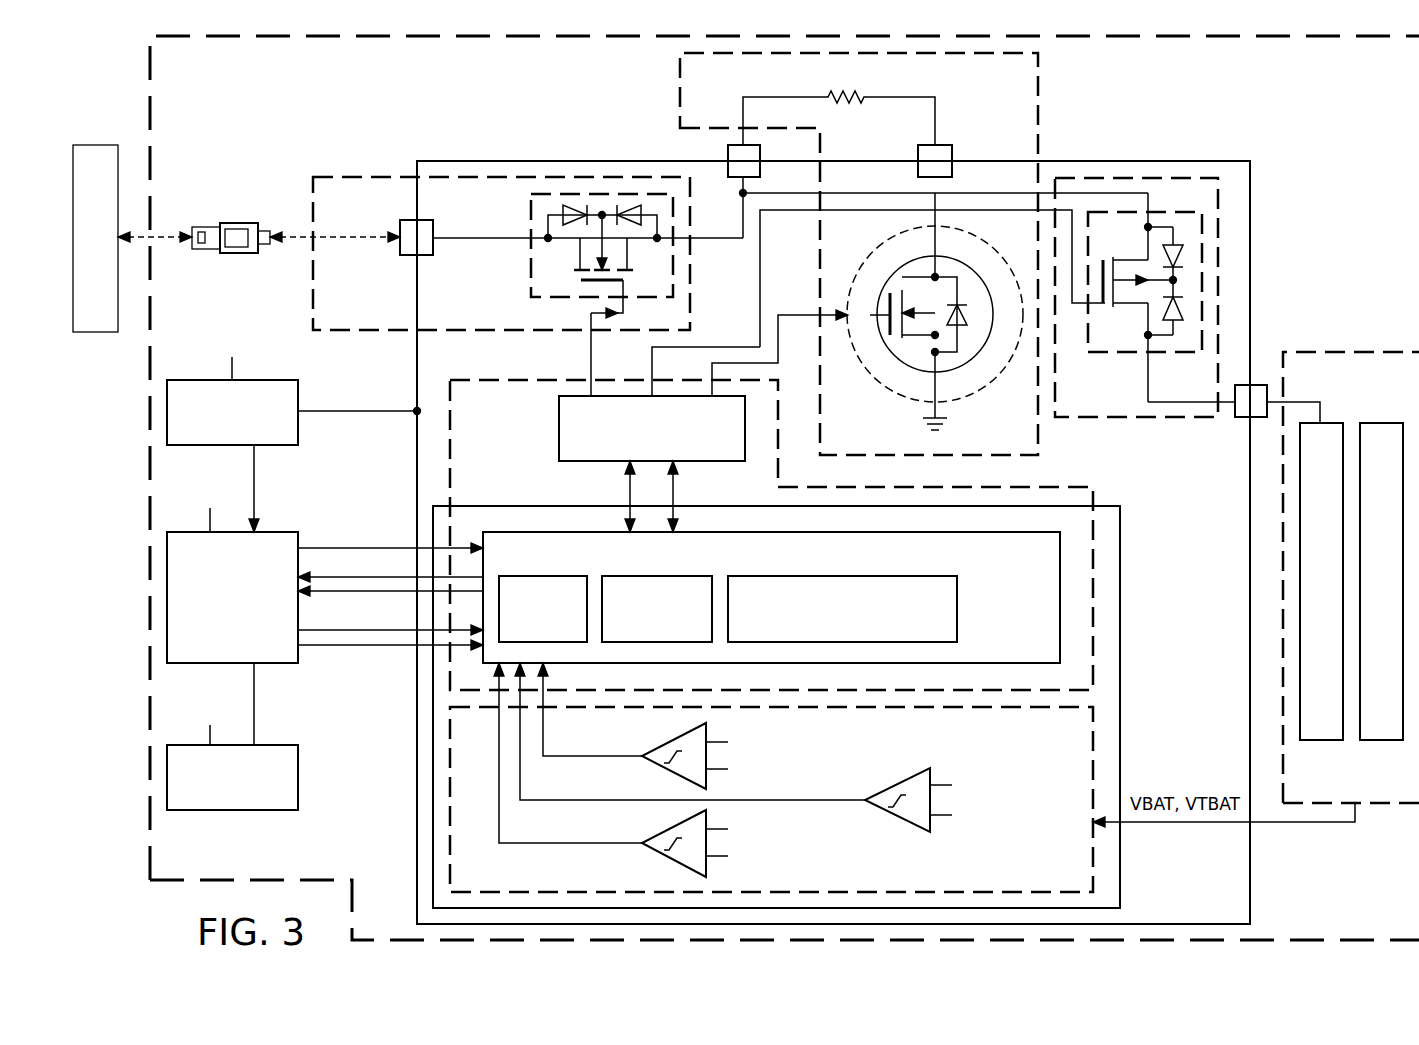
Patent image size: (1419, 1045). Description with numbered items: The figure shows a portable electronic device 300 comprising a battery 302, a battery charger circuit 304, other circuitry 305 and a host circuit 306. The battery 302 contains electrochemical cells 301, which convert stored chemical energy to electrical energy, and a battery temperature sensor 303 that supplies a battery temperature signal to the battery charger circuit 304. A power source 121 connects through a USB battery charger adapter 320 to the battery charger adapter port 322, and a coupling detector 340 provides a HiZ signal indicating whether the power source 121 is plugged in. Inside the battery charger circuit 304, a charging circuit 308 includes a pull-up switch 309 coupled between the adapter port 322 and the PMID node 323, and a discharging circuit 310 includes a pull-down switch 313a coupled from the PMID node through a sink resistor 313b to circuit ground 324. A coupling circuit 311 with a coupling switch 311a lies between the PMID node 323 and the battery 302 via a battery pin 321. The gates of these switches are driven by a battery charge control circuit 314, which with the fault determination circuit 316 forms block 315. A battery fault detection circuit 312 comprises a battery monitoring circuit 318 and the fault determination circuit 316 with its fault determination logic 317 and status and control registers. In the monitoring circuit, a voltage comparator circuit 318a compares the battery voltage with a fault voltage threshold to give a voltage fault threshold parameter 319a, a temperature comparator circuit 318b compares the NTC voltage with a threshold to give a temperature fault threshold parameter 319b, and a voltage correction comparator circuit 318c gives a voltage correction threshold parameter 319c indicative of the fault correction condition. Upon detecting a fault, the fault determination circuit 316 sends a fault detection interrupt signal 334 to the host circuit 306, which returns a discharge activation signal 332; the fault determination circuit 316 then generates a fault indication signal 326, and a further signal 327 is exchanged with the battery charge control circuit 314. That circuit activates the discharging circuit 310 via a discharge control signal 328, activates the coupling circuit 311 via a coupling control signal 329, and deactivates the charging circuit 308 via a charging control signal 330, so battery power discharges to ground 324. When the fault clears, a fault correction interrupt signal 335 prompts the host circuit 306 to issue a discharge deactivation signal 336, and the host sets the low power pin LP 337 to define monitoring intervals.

The power source 121 is at (96, 145).
The portable electronic device 300 is at (251, 93).
The electrochemical cells 301 is at (1318, 742).
The battery 302 is at (1367, 348).
The battery temperature sensor 303 is at (1380, 742).
The battery charger circuit 304 is at (503, 159).
The other circuitry 305 is at (233, 812).
The host circuit 306 is at (250, 641).
The charging circuit 308 is at (372, 175).
The pull-up switch 309 is at (531, 272).
The discharging circuit 310 is at (1042, 112).
The coupling circuit 311 is at (1136, 325).
The coupling switch 311a is at (1118, 354).
The battery fault detection circuit 312 is at (1124, 567).
The pull-down switch 313a is at (884, 386).
The sink resistor 313b is at (845, 102).
The battery charge control circuit 314 is at (559, 422).
The block 315 is at (525, 473).
The fault determination circuit 316 is at (1026, 573).
The fault determination logic 317 is at (957, 608).
The battery monitoring circuit 318 is at (1051, 868).
The voltage comparator circuit 318a is at (662, 728).
The temperature comparator circuit 318b is at (895, 822).
The voltage correction comparator circuit 318c is at (668, 854).
The voltage fault threshold parameter 319a is at (627, 762).
The temperature fault threshold parameter 319b is at (638, 801).
The voltage correction threshold parameter 319c is at (560, 846).
The battery charger adapter 320 is at (238, 253).
The battery pin 321 is at (1243, 420).
The battery charger adapter port 322 is at (400, 228).
The PMID node 323 is at (728, 152).
The circuit ground 324 is at (947, 420).
The fault indication signal 326 is at (628, 490).
The signal 327 is at (676, 490).
The discharge control signal 328 is at (805, 313).
The coupling control signal 329 is at (740, 345).
The charging control signal 330 is at (591, 356).
The discharge activation signal 332 is at (340, 633).
The fault detection interrupt signal 334 is at (365, 576).
The fault correction interrupt signal 335 is at (400, 592).
The discharge deactivation signal 336 is at (395, 648).
The low power pin LP 337 is at (322, 548).
The coupling detector 340 is at (299, 394).